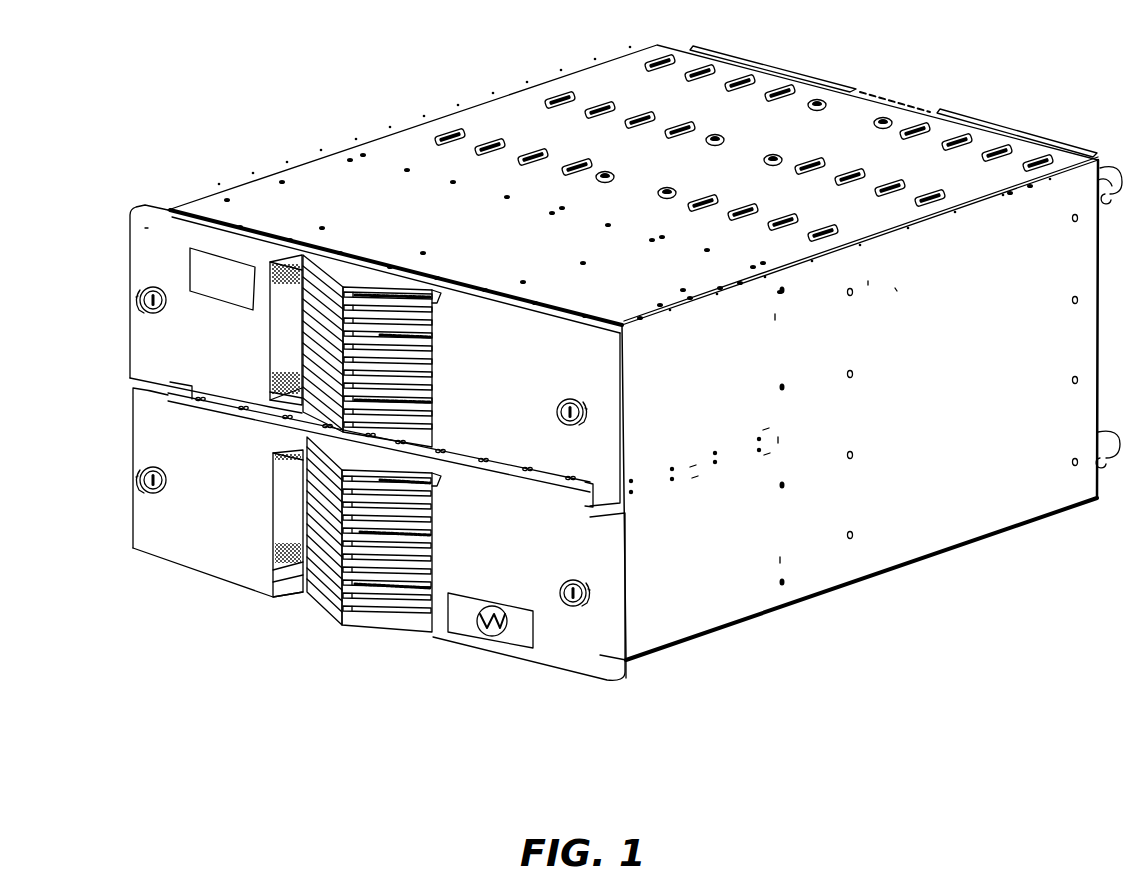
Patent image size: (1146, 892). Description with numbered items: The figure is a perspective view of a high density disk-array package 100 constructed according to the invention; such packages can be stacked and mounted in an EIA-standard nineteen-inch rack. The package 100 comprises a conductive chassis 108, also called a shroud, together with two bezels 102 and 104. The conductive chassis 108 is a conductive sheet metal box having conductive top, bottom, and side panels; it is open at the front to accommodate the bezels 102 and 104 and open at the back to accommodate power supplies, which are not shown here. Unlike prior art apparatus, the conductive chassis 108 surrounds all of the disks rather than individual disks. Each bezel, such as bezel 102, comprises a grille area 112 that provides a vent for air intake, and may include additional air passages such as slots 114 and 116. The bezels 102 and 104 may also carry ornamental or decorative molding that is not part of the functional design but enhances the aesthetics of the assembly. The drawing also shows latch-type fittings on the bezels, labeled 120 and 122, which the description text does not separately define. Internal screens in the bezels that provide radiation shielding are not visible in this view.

The high density disk-array package 100 is at (562, 95).
The bezel 102 is at (150, 243).
The bezel 104 is at (153, 432).
The conductive chassis 108 is at (462, 277).
The grille area 112 is at (448, 423).
The slots 114 is at (283, 327).
The slots 116 is at (397, 367).
The right latch knob 120 is at (587, 400).
The left latch knob 122 is at (143, 312).